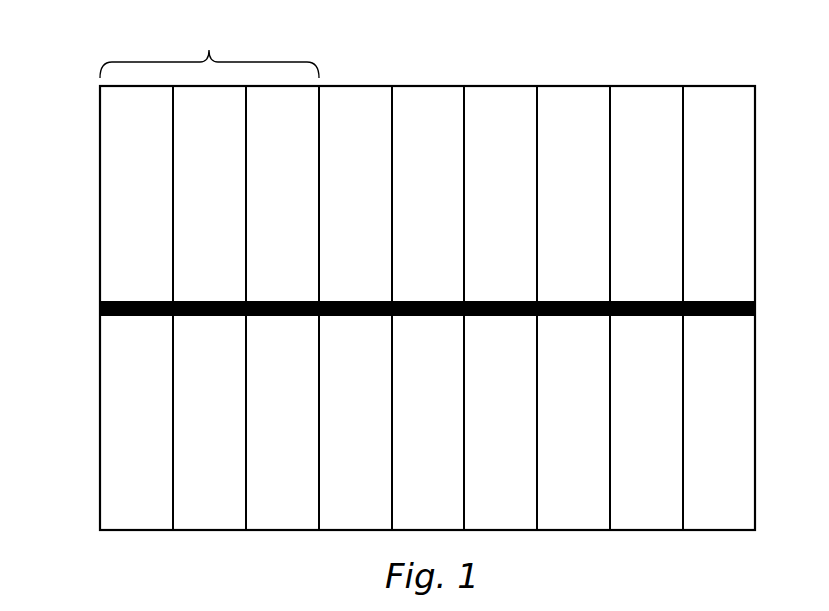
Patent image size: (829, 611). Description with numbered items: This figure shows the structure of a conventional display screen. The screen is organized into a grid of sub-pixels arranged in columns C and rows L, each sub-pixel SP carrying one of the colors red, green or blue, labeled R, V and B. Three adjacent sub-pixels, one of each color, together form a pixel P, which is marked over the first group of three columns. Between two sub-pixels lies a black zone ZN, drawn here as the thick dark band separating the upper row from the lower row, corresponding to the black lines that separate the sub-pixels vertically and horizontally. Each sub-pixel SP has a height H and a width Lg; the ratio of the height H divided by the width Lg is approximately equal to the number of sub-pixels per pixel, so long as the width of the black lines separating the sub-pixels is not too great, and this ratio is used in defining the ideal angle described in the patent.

The sub-pixel SP is at (120, 118).
The black zone ZN is at (173, 275).
The pixel P is at (209, 50).
The column C is at (427, 77).
The row L is at (83, 417).
The height H is at (781, 318).
The width Lg is at (755, 573).